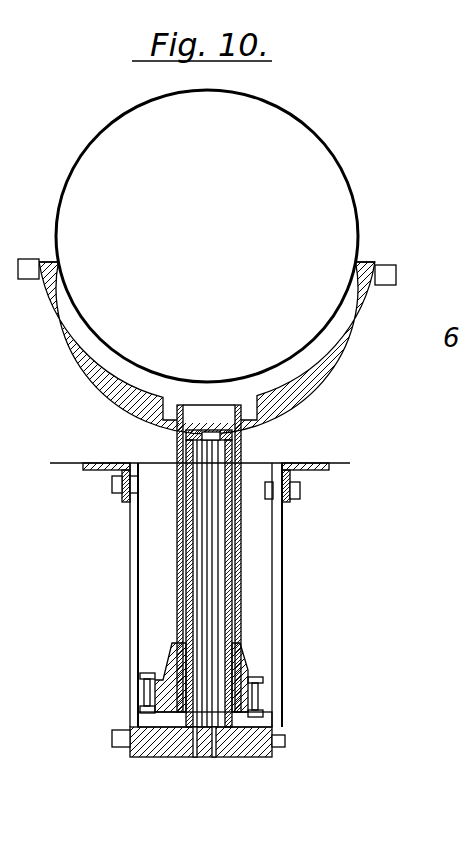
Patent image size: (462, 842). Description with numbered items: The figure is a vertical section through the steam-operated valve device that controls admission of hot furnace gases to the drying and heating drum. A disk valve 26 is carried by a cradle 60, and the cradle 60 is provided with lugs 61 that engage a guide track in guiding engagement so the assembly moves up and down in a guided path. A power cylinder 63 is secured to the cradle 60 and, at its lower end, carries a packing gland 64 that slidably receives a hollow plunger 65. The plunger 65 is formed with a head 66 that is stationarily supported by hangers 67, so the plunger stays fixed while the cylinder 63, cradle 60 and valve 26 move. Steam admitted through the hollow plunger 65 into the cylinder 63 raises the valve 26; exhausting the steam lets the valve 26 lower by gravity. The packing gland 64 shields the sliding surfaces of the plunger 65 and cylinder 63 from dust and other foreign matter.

The disk valve 26 is at (340, 224).
The cradle 60 is at (350, 335).
The lugs 61 is at (386, 275).
The power cylinder 63 is at (242, 440).
The packing gland 64 is at (235, 673).
The hollow plunger 65 is at (226, 589).
The head 66 is at (257, 737).
The hangers 67 is at (130, 592).